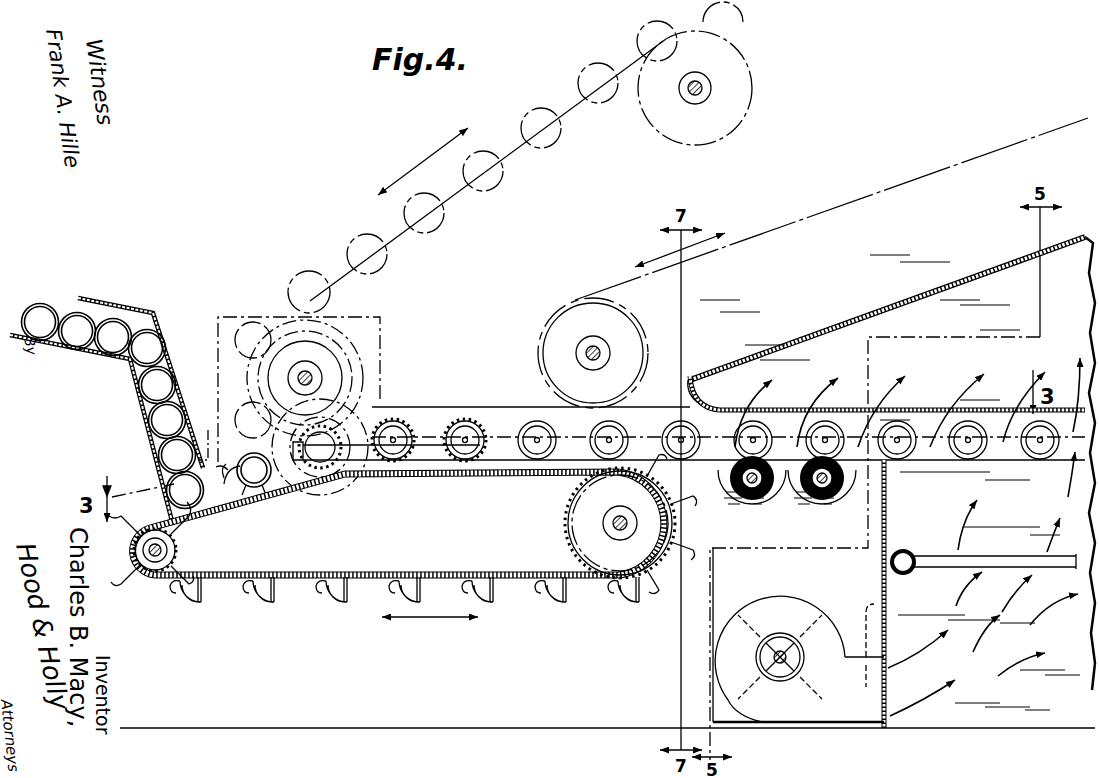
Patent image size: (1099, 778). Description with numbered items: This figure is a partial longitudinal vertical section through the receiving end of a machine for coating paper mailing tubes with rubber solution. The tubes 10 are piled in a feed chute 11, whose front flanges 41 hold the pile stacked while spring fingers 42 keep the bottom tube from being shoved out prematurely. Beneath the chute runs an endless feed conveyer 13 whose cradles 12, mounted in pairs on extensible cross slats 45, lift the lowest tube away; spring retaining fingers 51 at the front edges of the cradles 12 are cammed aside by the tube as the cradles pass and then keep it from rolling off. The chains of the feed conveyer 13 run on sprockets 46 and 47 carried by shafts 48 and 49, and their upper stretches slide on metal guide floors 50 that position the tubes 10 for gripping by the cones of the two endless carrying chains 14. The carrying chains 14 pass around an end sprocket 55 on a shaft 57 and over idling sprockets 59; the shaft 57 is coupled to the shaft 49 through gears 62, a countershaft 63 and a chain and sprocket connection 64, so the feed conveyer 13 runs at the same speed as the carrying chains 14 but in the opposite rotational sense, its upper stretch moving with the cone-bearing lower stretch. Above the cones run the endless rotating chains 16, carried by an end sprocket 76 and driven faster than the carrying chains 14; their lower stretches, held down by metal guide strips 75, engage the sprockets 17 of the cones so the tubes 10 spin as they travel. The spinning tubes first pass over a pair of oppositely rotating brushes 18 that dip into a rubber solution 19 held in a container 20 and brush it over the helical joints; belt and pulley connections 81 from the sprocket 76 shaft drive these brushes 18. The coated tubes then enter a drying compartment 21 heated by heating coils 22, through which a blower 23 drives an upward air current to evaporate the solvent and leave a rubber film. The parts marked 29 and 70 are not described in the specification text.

The tubes 10 is at (118, 320).
The feed chute 11 is at (154, 433).
The cradles 12 is at (130, 572).
The endless feed conveyer 13 is at (270, 568).
The endless carrying chains 14 is at (467, 190).
The endless rotating chains 16 is at (938, 165).
The sprockets 17 is at (412, 432).
The brushes 18 is at (756, 504).
The solution 19 is at (828, 500).
The container 20 is at (800, 504).
The drying compartment 21 is at (880, 584).
The heating coils 22 is at (1000, 553).
The blower 23 is at (798, 606).
The guide plate 29 is at (889, 308).
The flanges 41 is at (174, 362).
The spring fingers 42 is at (192, 428).
The extensible cross slats 45 is at (212, 490).
The sprockets 46 is at (178, 550).
The sprockets 47 is at (568, 524).
The shaft 48 is at (163, 562).
The shaft 49 is at (614, 526).
The metal guide floors 50 is at (486, 476).
The spring retaining fingers 51 is at (322, 600).
The end sprocket 55 is at (364, 378).
The shaft 57 is at (310, 372).
The idling sprockets 59 is at (740, 104).
The gears 62 is at (244, 458).
The countershaft 63 is at (323, 496).
The chain and sprocket connection 64 is at (444, 436).
The bar 70 is at (428, 462).
The metal guide strips 75 is at (766, 432).
The end sprocket 76 is at (585, 306).
The belt and pulley connections 81 is at (684, 368).